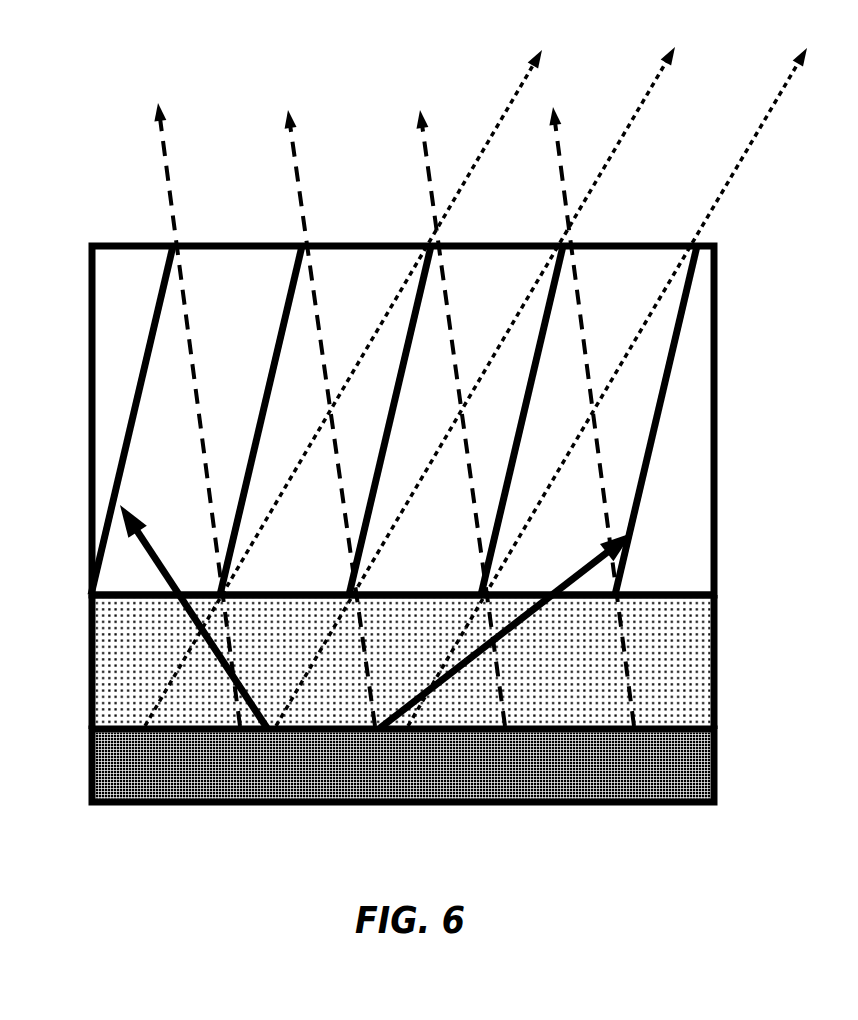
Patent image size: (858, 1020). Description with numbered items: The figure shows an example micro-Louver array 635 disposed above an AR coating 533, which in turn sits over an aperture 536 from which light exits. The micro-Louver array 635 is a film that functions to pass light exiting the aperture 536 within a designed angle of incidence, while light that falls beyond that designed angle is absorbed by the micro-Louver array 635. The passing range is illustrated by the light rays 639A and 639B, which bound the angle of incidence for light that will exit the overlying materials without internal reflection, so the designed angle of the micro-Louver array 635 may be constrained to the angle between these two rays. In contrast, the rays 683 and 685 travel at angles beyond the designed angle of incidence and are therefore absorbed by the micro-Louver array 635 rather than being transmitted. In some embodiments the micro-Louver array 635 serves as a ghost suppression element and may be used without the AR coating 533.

The AR coating 533 is at (121, 656).
The aperture 536 is at (713, 805).
The micro-Louver array 635 is at (722, 246).
The light ray 639A is at (385, 400).
The light ray 639B is at (485, 370).
The ray 683 is at (162, 556).
The ray 685 is at (570, 572).